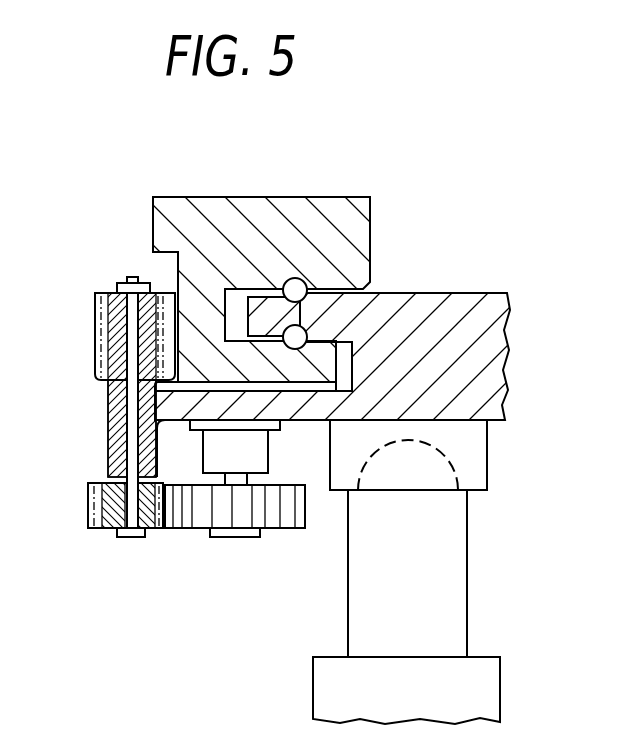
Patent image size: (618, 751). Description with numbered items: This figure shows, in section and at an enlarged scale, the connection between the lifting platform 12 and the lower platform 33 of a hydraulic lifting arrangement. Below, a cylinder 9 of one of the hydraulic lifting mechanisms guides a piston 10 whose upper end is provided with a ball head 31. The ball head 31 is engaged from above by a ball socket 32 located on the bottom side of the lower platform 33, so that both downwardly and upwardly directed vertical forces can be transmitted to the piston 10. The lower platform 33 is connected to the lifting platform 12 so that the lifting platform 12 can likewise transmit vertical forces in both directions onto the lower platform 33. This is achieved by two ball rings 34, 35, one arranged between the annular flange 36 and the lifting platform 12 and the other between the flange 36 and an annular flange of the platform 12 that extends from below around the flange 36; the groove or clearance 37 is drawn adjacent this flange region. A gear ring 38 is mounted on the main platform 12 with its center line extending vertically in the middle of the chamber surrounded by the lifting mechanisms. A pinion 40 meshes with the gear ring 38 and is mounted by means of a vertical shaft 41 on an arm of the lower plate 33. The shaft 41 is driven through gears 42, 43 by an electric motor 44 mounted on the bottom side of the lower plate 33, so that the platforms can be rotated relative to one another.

The cylinder 9 is at (490, 682).
The piston 10 is at (457, 573).
The lifting platform 12 is at (289, 208).
The ball head 31 is at (460, 463).
The ball socket 32 is at (477, 480).
The lower platform 33 is at (495, 400).
The ball ring 34 is at (297, 290).
The ball ring 35 is at (297, 337).
The annular flange 36 is at (260, 305).
The groove 37 is at (325, 368).
The gear ring 38 is at (175, 295).
The pinion 40 is at (102, 320).
The vertical shaft 41 is at (130, 406).
The gear 42 is at (98, 500).
The gear 43 is at (298, 507).
The electric motor 44 is at (258, 453).